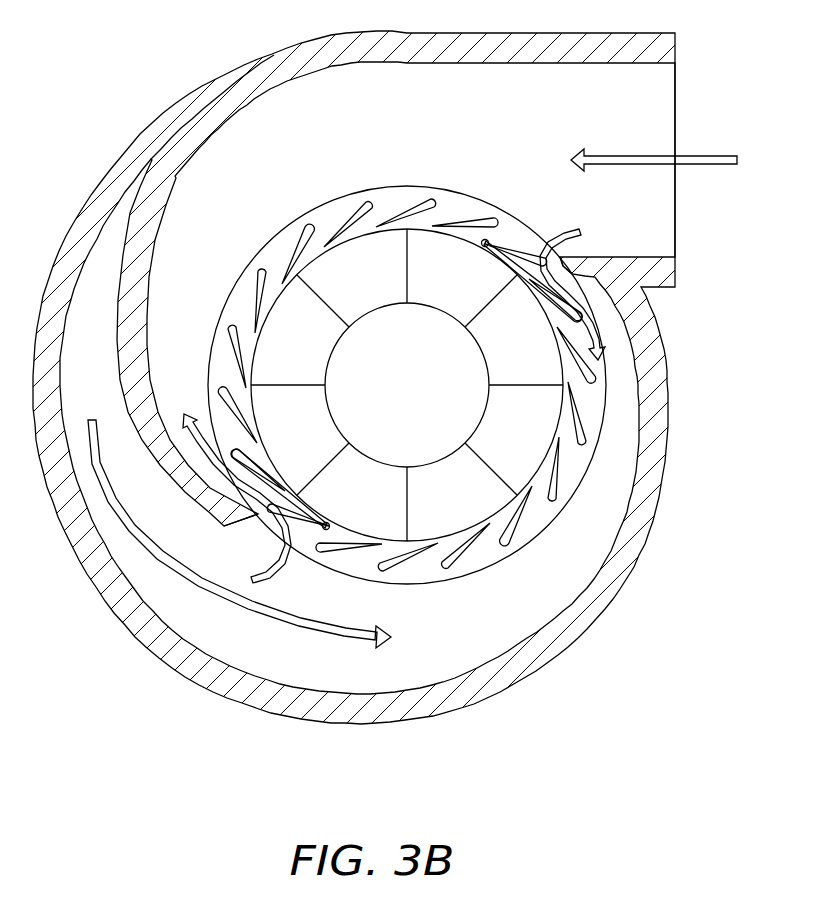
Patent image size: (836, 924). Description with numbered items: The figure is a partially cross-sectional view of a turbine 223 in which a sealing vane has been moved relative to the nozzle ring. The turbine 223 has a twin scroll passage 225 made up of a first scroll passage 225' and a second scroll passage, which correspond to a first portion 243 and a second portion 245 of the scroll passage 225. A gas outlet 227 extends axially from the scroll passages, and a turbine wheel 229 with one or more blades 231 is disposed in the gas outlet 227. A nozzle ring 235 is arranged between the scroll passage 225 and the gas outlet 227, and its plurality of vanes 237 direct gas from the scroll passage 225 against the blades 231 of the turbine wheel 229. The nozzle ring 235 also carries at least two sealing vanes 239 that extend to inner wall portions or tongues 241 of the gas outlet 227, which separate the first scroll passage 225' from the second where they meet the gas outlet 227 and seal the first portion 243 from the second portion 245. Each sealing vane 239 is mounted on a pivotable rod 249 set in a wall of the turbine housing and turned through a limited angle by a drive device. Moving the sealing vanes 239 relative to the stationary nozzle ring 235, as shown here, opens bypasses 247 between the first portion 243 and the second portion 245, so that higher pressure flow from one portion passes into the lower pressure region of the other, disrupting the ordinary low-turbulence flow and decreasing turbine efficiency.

The turbine 223 is at (613, 657).
The twin scroll passage 225 is at (419, 414).
The first scroll passage 225' is at (695, 122).
The gas outlet 227 is at (379, 418).
The turbine wheel 229 is at (451, 369).
The blades 231 is at (503, 482).
The nozzle ring 235 is at (486, 556).
The vanes 237 is at (407, 572).
The sealing vanes 239 is at (514, 257).
The tongues 241 is at (542, 290).
The first portion of the scroll passage 243 is at (648, 207).
The second portion of the scroll passage 245 is at (431, 656).
The bypasses 247 is at (571, 267).
The pivotable rod 249 is at (485, 240).